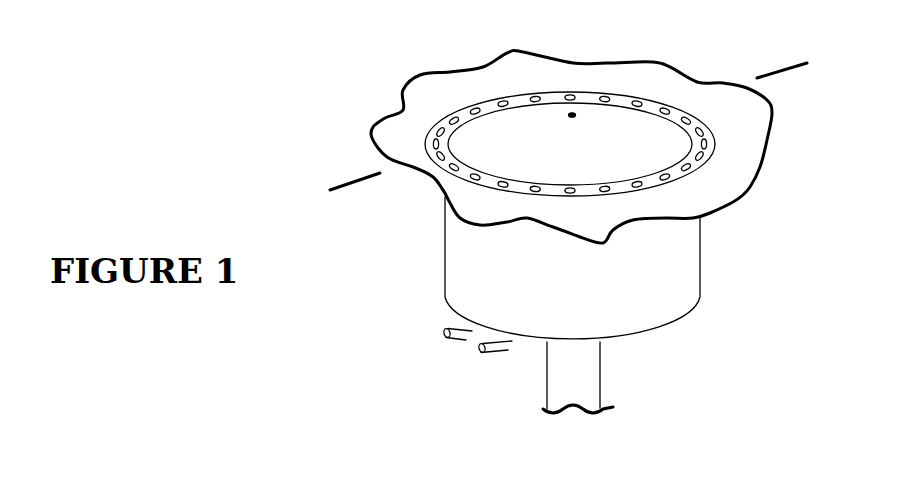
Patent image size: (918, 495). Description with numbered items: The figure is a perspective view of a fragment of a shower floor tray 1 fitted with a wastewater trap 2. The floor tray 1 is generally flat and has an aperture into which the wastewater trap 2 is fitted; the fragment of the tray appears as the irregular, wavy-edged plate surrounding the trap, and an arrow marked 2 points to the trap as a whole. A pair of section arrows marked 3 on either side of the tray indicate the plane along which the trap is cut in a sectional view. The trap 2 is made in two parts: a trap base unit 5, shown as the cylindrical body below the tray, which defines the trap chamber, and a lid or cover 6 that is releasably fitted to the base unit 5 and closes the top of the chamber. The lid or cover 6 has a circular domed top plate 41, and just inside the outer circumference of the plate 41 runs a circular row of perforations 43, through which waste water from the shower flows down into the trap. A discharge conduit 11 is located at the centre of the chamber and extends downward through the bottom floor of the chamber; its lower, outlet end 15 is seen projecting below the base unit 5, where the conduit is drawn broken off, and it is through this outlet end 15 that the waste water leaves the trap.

The floor tray 1 is at (737, 173).
The wastewater trap 2 is at (680, 36).
The section line 3 is at (786, 77).
The trap base unit 5 is at (667, 313).
The lid or cover 6 is at (662, 128).
The discharge conduit 11 is at (590, 368).
The outlet end 15 is at (587, 410).
The domed top plate 41 is at (505, 137).
The perforations 43 is at (598, 93).